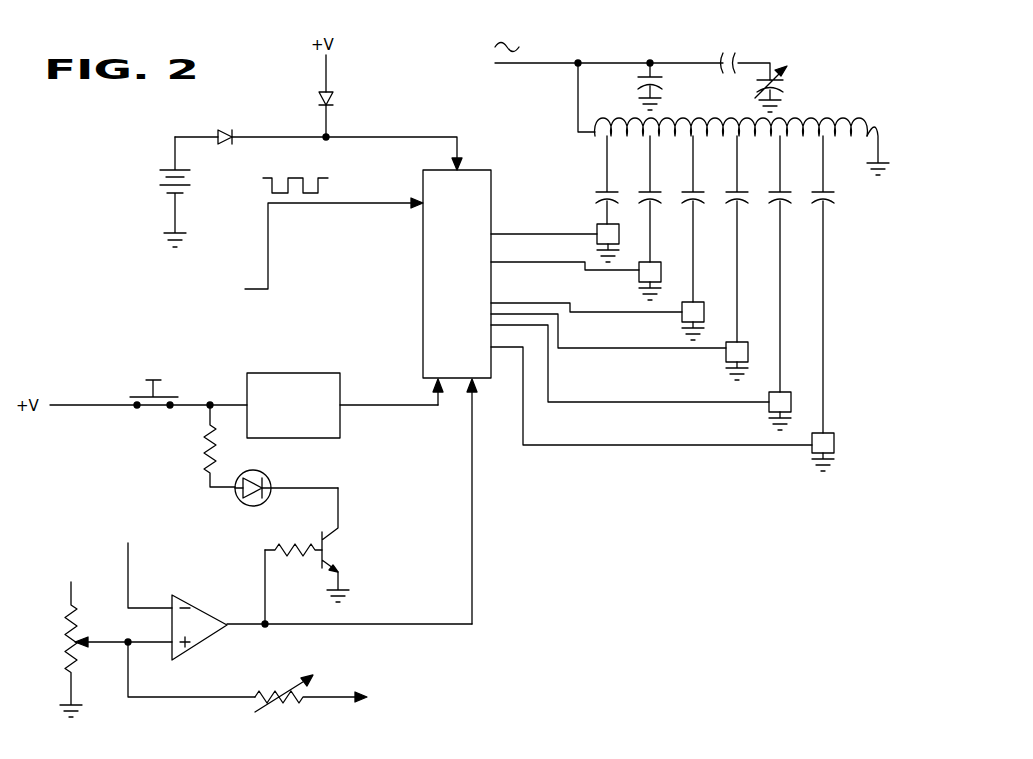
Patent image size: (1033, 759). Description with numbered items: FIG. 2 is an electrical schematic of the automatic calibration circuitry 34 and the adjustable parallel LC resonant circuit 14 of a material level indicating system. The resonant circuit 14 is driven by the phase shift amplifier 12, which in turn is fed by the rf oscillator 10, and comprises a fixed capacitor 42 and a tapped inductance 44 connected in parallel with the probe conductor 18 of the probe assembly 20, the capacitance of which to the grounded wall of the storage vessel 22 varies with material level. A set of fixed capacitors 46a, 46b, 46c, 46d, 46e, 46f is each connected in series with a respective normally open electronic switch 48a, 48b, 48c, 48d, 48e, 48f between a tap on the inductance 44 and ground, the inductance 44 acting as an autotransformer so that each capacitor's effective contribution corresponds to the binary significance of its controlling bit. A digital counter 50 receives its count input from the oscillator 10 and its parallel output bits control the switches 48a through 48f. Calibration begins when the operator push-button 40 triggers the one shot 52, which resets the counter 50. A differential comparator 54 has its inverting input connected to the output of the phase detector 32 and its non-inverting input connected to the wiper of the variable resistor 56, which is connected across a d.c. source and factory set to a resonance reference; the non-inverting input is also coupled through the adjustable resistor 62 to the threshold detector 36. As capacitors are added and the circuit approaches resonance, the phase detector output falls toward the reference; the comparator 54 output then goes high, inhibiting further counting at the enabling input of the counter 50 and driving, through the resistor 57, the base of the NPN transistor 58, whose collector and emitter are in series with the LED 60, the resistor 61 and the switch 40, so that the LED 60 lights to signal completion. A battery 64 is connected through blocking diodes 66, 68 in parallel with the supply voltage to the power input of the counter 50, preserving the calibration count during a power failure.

The rf oscillator 10 is at (256, 238).
The phase shift amplifier 12 is at (413, 72).
The adjustable parallel LC resonant circuit 14 is at (598, 46).
The probe conductor 18 is at (794, 83).
The probe assembly 20 is at (780, 50).
The storage vessel 22 is at (779, 94).
The phase detector 32 is at (137, 552).
The automatic calibration circuitry 34 is at (562, 519).
The threshold detector 36 is at (484, 699).
The operator push-button 40 is at (132, 376).
The fixed capacitor 42 is at (666, 86).
The inductance 44 is at (846, 128).
The fixed capacitor 46a is at (596, 194).
The fixed capacitor 46b is at (637, 193).
The fixed capacitor 46c is at (680, 193).
The fixed capacitor 46d is at (724, 193).
The fixed capacitor 46e is at (768, 193).
The fixed capacitor 46f is at (811, 193).
The controlled electronic switch 48a is at (597, 232).
The controlled electronic switch 48b is at (639, 278).
The controlled electronic switch 48c is at (682, 317).
The controlled electronic switch 48d is at (726, 356).
The controlled electronic switch 48e is at (768, 406).
The controlled electronic switch 48f is at (805, 452).
The digital counter 50 is at (482, 182).
The one shot 52 is at (317, 372).
The differential comparator 54 is at (201, 619).
The variable resistor 56 is at (78, 641).
The resistor 57 is at (296, 545).
The NPN transistor 58 is at (340, 545).
The LED 60 is at (269, 482).
The resistor 61 is at (204, 452).
The adjustable resistor 62 is at (273, 695).
The battery 64 is at (160, 182).
The blocking diode 66 is at (226, 130).
The blocking diode 68 is at (319, 101).